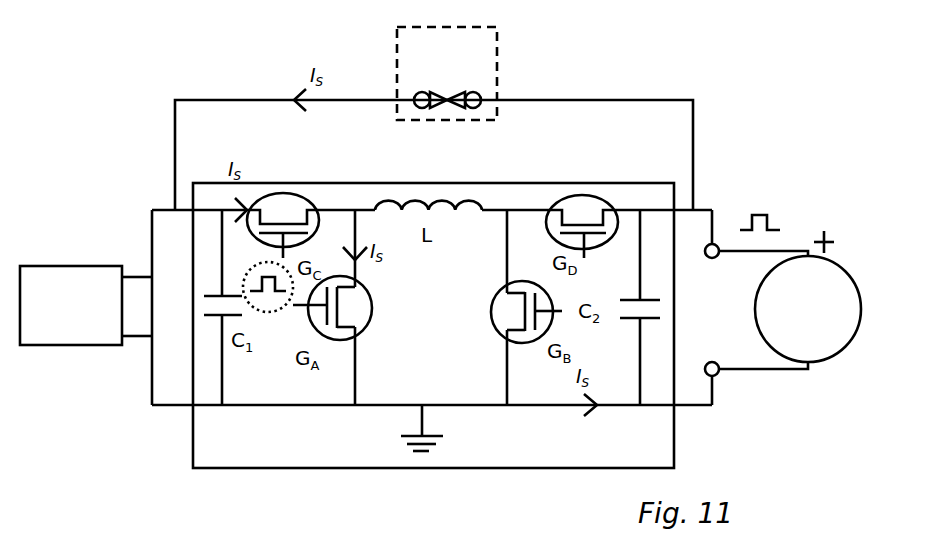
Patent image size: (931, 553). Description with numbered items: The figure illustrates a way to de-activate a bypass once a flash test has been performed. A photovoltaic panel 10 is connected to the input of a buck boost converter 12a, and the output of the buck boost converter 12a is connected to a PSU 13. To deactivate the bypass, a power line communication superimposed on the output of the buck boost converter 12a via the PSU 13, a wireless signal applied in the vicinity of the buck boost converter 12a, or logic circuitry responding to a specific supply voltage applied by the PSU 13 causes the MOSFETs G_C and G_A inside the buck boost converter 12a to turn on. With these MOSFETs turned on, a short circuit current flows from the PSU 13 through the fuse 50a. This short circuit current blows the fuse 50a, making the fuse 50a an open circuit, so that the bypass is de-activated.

The photovoltaic panel 10 is at (86, 305).
The buck boost converter 12a is at (433, 325).
The PSU 13 is at (790, 300).
The fuse 50a is at (447, 73).